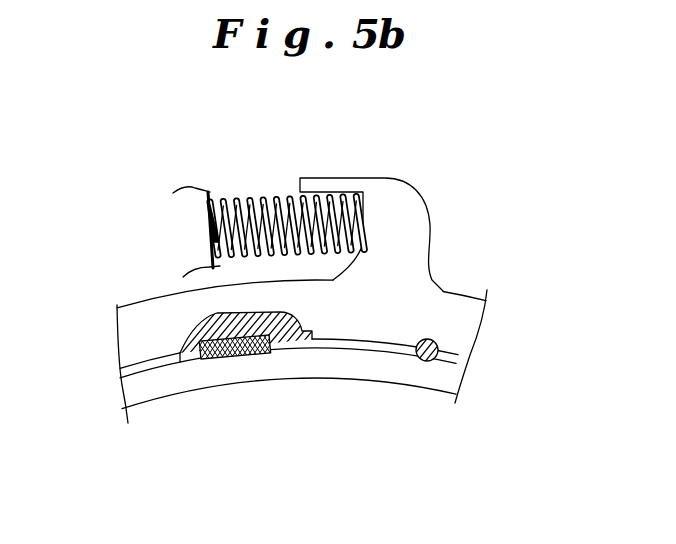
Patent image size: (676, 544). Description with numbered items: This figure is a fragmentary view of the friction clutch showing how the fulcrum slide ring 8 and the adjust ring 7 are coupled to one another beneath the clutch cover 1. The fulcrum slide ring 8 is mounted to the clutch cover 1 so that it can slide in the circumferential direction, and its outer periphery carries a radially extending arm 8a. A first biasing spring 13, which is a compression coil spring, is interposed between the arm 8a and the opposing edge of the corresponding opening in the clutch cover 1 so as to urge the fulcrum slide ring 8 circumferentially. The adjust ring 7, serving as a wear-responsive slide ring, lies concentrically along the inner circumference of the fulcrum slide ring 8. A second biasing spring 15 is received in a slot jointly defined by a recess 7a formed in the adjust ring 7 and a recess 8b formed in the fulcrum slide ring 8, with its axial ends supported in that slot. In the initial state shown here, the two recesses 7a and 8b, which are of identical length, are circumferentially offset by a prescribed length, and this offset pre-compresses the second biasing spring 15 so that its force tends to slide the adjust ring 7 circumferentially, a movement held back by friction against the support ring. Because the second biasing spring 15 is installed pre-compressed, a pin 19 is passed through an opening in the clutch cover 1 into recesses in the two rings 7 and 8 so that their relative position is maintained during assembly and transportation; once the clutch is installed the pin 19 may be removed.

The clutch cover 1 is at (210, 192).
The first biasing spring 13 is at (277, 196).
The arm 8a is at (387, 178).
The fulcrum slide ring 8 is at (467, 290).
The recess 7a is at (192, 363).
The pin 19 is at (440, 341).
The adjust ring 7 is at (427, 388).
The recess 8b is at (283, 335).
The second biasing spring 15 is at (246, 358).